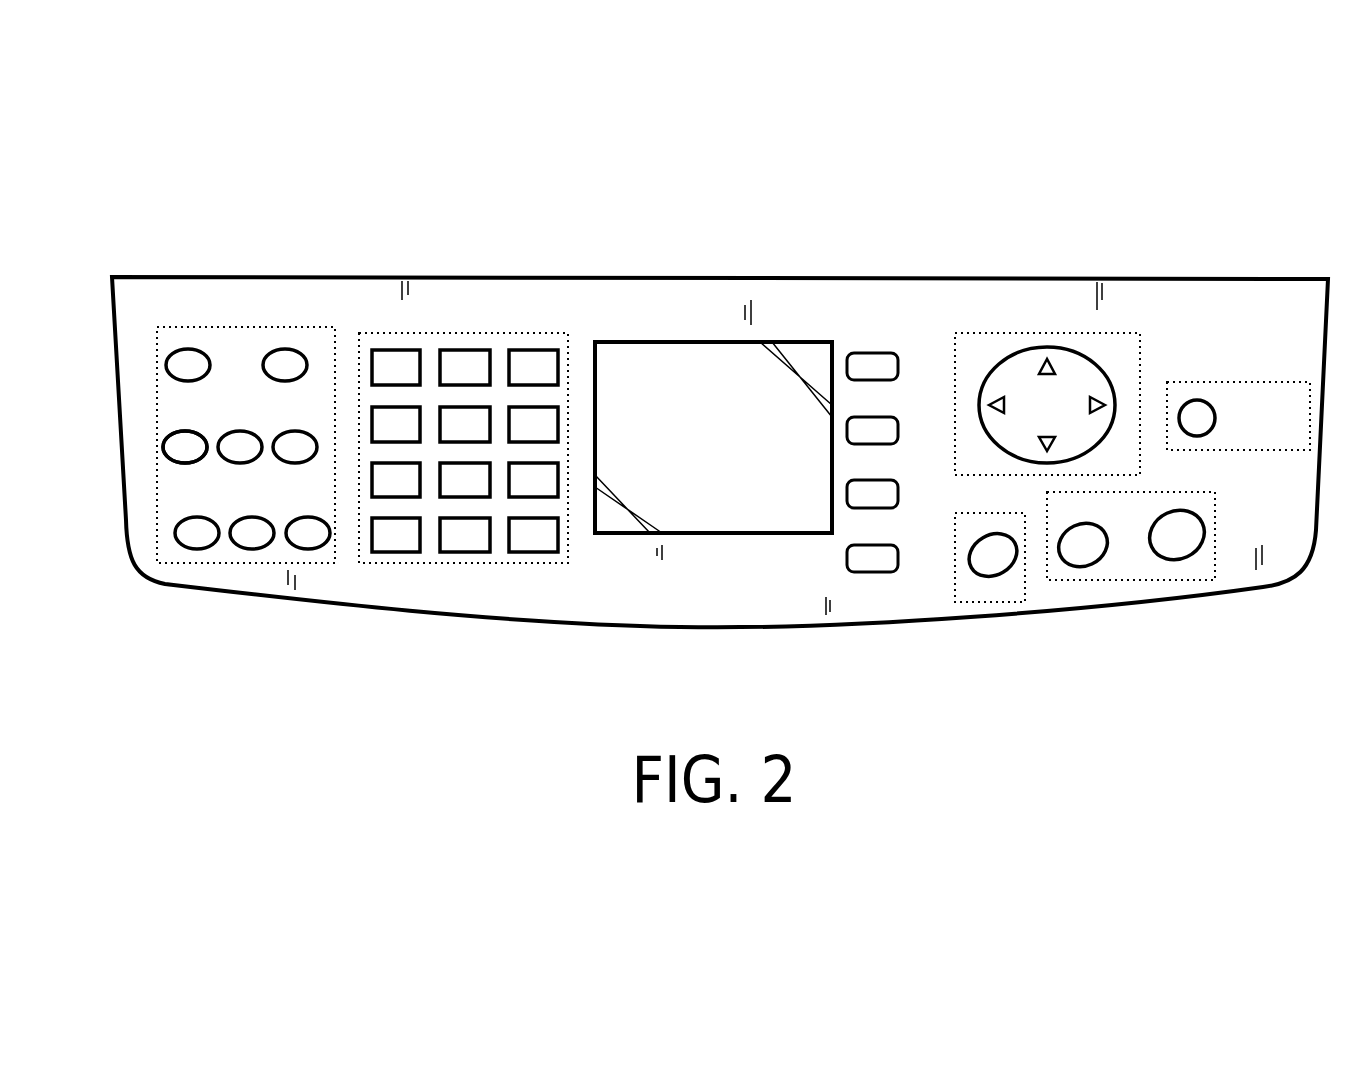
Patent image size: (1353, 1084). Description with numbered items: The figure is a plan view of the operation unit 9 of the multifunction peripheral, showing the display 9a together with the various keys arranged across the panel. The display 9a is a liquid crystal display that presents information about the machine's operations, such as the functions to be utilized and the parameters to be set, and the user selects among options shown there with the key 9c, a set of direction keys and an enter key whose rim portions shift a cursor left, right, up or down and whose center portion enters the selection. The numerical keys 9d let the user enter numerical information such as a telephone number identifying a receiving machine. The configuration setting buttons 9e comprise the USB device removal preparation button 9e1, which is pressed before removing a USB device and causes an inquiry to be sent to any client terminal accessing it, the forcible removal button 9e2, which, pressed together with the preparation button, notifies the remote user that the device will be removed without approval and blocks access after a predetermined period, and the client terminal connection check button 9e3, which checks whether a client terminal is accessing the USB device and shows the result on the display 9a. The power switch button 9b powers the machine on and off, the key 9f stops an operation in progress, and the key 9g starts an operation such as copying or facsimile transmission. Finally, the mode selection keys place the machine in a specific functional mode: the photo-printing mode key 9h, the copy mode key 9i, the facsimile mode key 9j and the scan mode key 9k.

The operation unit 9 is at (1243, 685).
The display 9a is at (670, 342).
The power switch button 9b is at (1260, 382).
The set of direction keys and enter key 9c is at (1045, 333).
The numerical keys 9d is at (472, 563).
The configuration setting buttons 9e is at (247, 563).
The USB device removal preparation button 9e1 is at (285, 360).
The forcible removal button 9e2 is at (188, 360).
The client terminal connection check button 9e3 is at (177, 445).
The stop button 9f is at (988, 602).
The start button 9g is at (1130, 580).
The photo-printing mode key 9h is at (898, 366).
The copy mode key 9i is at (898, 430).
The facsimile mode key 9j is at (898, 494).
The scan mode key 9k is at (898, 558).